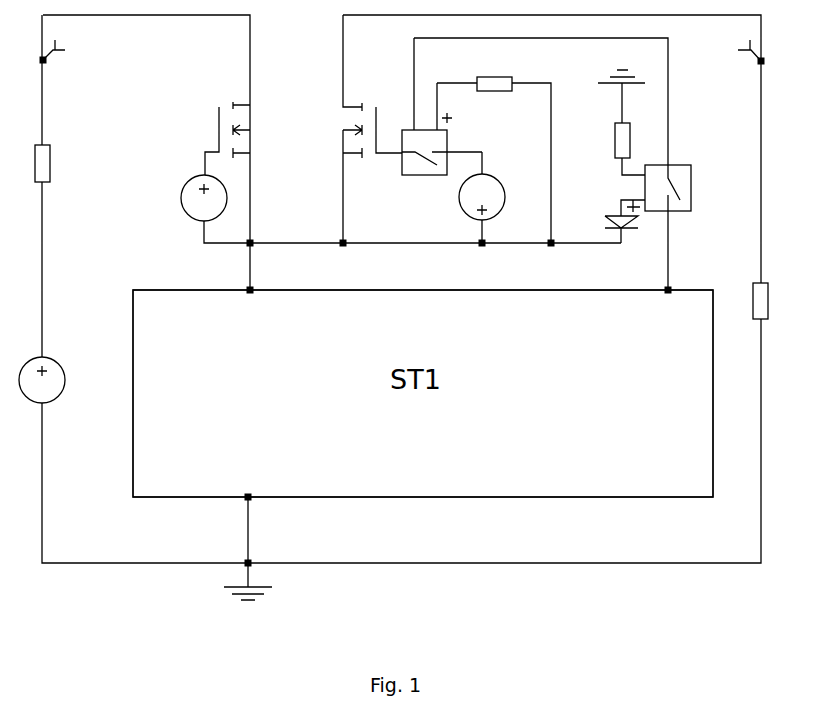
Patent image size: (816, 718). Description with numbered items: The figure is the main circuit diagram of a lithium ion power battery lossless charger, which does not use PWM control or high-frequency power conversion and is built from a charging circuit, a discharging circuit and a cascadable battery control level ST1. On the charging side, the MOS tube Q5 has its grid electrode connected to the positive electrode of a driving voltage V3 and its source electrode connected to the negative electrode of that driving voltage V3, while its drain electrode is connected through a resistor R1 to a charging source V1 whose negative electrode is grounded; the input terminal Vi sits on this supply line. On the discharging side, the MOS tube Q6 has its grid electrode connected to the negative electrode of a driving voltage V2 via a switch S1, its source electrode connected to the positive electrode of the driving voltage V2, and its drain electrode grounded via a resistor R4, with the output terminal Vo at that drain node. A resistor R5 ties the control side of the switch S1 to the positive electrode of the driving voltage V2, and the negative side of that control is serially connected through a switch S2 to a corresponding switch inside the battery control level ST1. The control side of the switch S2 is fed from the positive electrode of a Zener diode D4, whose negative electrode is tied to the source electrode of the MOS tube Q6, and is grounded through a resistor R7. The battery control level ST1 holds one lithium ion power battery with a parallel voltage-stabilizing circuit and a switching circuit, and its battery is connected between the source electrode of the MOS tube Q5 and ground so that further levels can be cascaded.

The input voltage terminal Vi is at (66, 50).
The output voltage terminal Vo is at (736, 50).
The resistor R1 is at (56, 157).
The resistor R4 is at (745, 312).
The resistor R5 is at (494, 160).
The resistor R7 is at (621, 127).
The MOS tube Q5 is at (242, 172).
The MOS tube Q6 is at (354, 129).
The switch S1 is at (442, 120).
The switch S2 is at (671, 202).
The charging source V1 is at (49, 393).
The driving voltage V2 is at (479, 197).
The driving voltage V3 is at (215, 212).
The Zener diode D4 is at (621, 219).
The battery control level ST1 is at (423, 393).